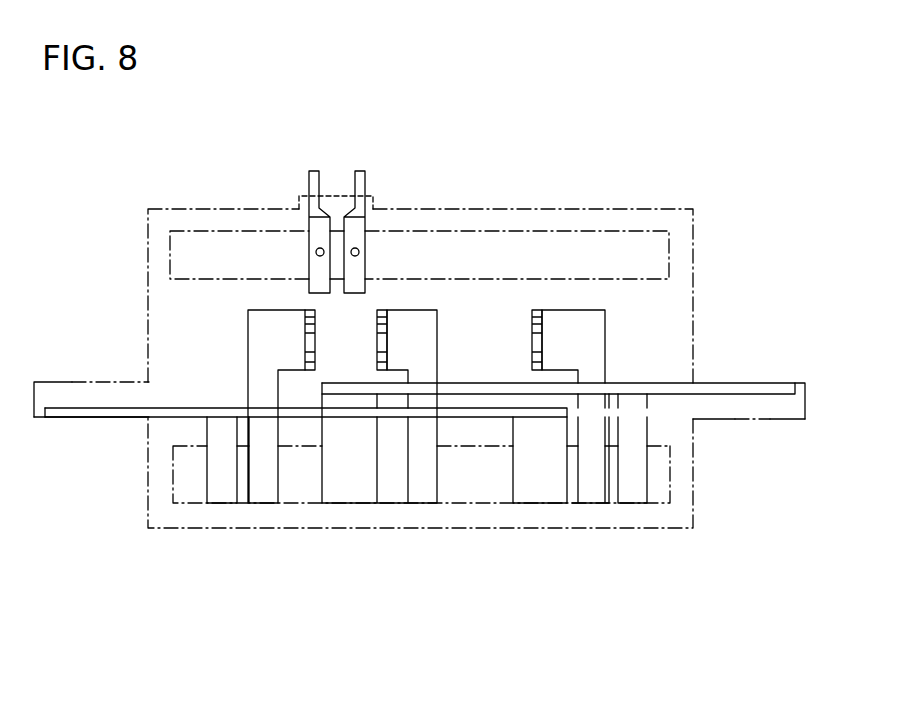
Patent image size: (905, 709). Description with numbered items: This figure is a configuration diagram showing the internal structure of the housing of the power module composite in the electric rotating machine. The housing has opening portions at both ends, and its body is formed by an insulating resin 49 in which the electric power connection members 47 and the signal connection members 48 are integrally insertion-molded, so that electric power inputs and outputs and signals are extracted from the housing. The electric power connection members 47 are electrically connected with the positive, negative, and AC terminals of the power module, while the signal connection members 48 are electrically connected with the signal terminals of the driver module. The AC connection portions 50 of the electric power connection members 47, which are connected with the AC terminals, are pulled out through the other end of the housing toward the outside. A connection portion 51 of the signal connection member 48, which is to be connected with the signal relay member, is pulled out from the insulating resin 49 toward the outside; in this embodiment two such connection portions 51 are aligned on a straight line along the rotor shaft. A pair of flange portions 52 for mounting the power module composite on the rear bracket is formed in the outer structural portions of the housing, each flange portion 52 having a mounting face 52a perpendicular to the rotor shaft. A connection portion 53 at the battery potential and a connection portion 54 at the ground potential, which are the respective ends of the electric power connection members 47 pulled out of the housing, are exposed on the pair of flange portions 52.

The electric power connection member 47 is at (262, 477).
The signal connection member 48 is at (315, 268).
The insulating resin 49 is at (610, 222).
The AC connection portion 50 is at (305, 310).
The connection portion 51 is at (348, 191).
The flange portion 52 is at (70, 382).
The mounting face 52a is at (127, 418).
The connection portion 53 is at (755, 383).
The connection portion 54 is at (87, 418).